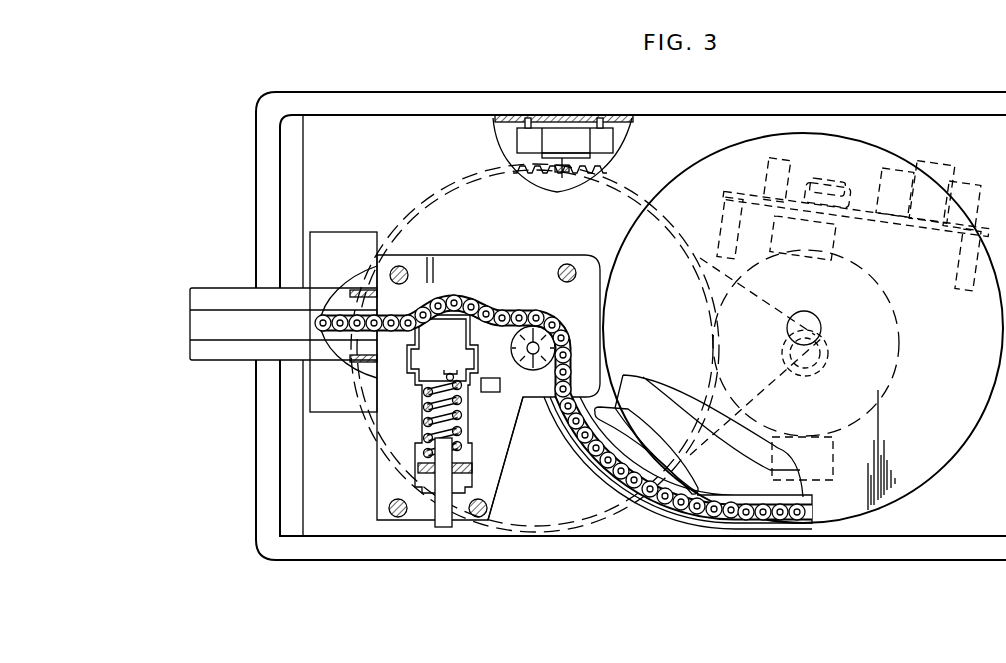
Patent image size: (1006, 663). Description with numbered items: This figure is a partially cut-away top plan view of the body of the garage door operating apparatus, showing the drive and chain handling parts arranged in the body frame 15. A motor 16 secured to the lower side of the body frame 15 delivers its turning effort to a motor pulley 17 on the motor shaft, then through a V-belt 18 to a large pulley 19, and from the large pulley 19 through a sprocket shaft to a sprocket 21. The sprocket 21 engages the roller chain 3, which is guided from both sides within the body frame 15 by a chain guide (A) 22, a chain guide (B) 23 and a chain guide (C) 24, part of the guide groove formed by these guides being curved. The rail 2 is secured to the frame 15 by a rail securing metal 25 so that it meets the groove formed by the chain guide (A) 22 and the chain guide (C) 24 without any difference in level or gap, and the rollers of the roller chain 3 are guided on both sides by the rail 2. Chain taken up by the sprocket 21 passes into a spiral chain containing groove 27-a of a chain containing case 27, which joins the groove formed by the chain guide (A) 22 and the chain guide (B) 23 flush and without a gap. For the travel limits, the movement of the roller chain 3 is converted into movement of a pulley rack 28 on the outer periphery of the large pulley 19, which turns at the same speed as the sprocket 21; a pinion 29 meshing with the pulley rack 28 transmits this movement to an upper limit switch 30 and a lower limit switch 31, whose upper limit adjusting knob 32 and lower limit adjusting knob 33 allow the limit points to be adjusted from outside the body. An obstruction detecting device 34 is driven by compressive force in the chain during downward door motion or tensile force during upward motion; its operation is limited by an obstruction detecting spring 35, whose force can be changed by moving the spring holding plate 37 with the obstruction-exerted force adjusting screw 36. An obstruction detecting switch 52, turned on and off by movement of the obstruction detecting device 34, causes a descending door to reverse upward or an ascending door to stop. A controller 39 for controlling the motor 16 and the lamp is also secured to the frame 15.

The rail 2 is at (214, 288).
The roller chain 3 is at (698, 527).
The body frame 15 is at (256, 172).
The motor 16 is at (983, 334).
The motor pulley 17 is at (825, 364).
The V-belt 18 is at (770, 398).
The large pulley 19 is at (415, 215).
The sprocket 21 is at (526, 326).
The chain guide (A) 22 is at (475, 256).
The chain guide (B) 23 is at (500, 480).
The chain guide (C) 24 is at (370, 405).
The rail securing metal 25 is at (342, 240).
The chain containing case 27 is at (920, 476).
The spiral chain containing groove 27-a is at (800, 527).
The pulley rack 28 is at (518, 162).
The pinion 29 is at (585, 168).
The upper limit switch 30 is at (520, 138).
The lower limit switch 31 is at (612, 144).
The upper limit adjusting knob 32 is at (528, 116).
The lower limit adjusting knob 33 is at (600, 116).
The obstruction detecting device 34 is at (422, 376).
The obstruction detecting spring 35 is at (425, 428).
The obstruction-exerted force adjusting screw 36 is at (443, 527).
The spring holding plate 37 is at (418, 468).
The controller 39 is at (870, 170).
The obstruction detecting switch 52 is at (492, 392).